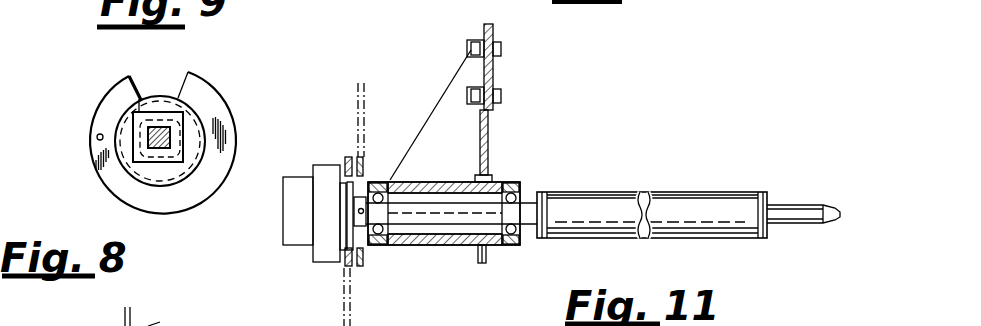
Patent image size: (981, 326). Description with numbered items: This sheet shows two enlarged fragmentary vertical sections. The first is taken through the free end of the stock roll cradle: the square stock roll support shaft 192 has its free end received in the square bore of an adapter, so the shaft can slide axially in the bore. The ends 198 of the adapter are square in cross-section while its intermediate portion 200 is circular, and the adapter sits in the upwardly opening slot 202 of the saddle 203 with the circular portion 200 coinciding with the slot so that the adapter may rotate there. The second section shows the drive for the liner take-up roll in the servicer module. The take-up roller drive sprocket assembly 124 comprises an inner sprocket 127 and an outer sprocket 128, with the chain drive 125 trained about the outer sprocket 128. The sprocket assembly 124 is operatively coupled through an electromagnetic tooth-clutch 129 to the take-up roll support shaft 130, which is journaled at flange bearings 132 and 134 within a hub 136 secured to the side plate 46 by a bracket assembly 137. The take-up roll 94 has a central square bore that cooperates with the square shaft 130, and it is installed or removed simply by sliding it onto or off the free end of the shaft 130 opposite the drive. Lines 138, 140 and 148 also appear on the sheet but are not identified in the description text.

In FIG. 11, the side plate 46 is at (490, 30).
In FIG. 11, the take-up roll 94 is at (705, 192).
In FIG. 11, the take-up roller drive sprocket assembly 124 is at (360, 268).
In FIG. 11, the chain drive 125 is at (342, 305).
In FIG. 11, the inner sprocket 127 is at (362, 157).
In FIG. 11, the outer sprocket 128 is at (348, 157).
In FIG. 11, the electromagnetic tooth-clutch 129 is at (283, 228).
In FIG. 11, the take-up roll support shaft 130 is at (805, 203).
In FIG. 11, the flange bearing 132 is at (366, 245).
In FIG. 11, the flange bearing 134 is at (510, 245).
In FIG. 11, the hub 136 is at (418, 182).
In FIG. 11, the bracket assembly 137 is at (443, 95).
In FIG. 11, the axis line 138 is at (355, 90).
In FIG. 8, the element 140 is at (155, 325).
In FIG. 8, the element 148 is at (117, 313).
In FIG. 8, the square stock roll support shaft 192 is at (133, 152).
In FIG. 8, the ends of the adapter 198 is at (182, 110).
In FIG. 8, the intermediate portion 200 is at (212, 110).
In FIG. 8, the upwardly opening slot 202 is at (129, 75).
In FIG. 8, the saddle 203 is at (103, 114).